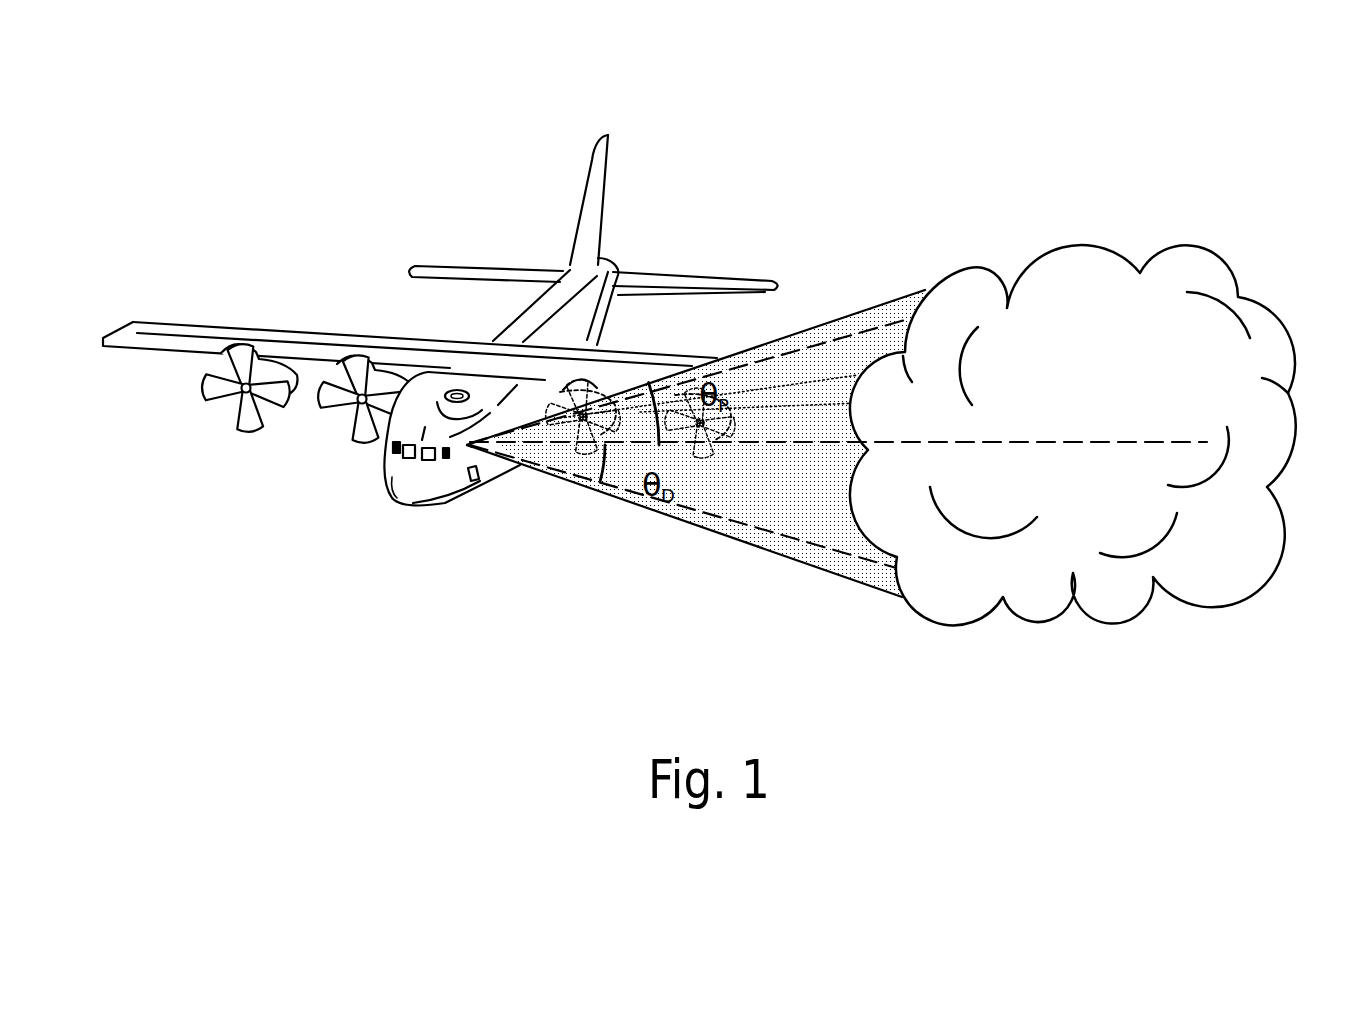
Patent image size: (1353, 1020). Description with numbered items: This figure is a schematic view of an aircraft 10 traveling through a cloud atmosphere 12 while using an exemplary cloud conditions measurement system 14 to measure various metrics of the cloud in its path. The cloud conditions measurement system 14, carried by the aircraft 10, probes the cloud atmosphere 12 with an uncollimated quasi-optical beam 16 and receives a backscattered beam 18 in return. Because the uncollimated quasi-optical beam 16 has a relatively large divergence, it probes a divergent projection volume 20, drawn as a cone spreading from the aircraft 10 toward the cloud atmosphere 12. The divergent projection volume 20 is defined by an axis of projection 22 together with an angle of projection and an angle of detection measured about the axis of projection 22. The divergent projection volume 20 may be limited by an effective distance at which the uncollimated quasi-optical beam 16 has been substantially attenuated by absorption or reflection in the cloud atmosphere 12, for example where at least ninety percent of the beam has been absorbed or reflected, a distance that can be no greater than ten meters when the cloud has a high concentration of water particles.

The aircraft 10 is at (311, 203).
The cloud atmosphere 12 is at (1108, 417).
The cloud conditions measurement system 14 is at (462, 451).
The uncollimated quasi-optical beam 16 is at (861, 301).
The backscattered beam 18 is at (710, 510).
The divergent projection volume 20 is at (828, 514).
The axis of projection 22 is at (778, 443).